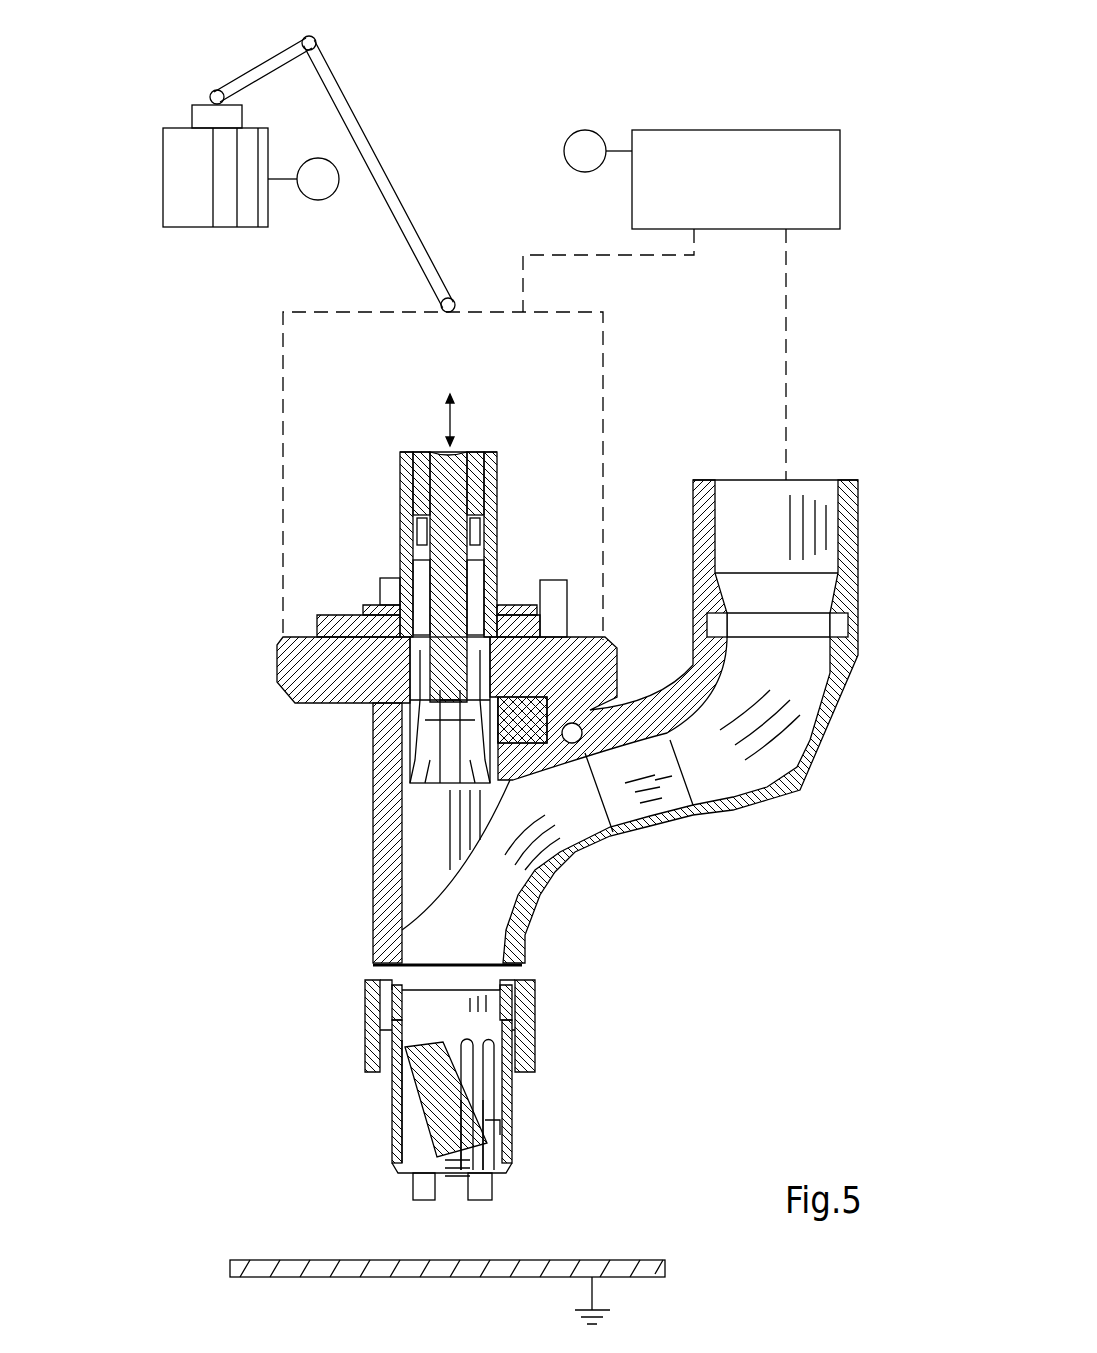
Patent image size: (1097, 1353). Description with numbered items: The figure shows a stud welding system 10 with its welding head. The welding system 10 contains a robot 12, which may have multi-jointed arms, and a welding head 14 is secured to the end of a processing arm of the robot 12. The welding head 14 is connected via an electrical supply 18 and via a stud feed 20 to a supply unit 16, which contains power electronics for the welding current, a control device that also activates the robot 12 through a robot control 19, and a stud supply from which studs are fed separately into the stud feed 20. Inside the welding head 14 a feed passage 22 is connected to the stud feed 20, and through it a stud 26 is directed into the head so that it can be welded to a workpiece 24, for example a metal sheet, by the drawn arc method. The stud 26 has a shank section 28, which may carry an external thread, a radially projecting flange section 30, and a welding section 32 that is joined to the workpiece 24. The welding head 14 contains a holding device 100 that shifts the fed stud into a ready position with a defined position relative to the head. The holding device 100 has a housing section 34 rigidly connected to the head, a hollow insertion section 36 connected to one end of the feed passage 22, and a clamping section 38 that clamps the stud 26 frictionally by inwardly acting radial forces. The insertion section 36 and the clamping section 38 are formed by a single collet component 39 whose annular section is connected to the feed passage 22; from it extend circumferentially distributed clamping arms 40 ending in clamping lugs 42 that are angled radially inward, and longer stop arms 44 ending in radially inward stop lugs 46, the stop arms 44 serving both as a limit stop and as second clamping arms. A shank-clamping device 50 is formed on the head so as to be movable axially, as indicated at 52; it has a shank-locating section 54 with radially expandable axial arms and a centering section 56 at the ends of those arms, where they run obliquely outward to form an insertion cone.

The welding system 10 is at (660, 105).
The robot 12 is at (395, 140).
The welding head 14 is at (283, 470).
The supply unit 16 is at (799, 130).
The electrical supply 18 is at (570, 250).
The robot control 19 is at (585, 130).
The stud feed 20 is at (790, 325).
The feed passage 22 is at (715, 783).
The workpiece 24 is at (620, 1265).
The stud 26 is at (480, 1114).
The shank section 28 is at (440, 1093).
The flange section 30 is at (500, 1125).
The welding section 32 is at (497, 1177).
The housing section 34 is at (367, 970).
The insertion section 36 is at (330, 963).
The clamping section 38 is at (330, 1147).
The collet component 39 is at (467, 1010).
The clamping arms 40 is at (400, 1120).
The clamping lugs 42 is at (413, 1173).
The stop arms 44 is at (477, 1177).
The stop lugs 46 is at (477, 1197).
The shank-clamping device 50 is at (399, 503).
The axial movement 52 is at (447, 428).
The shank-locating section 54 is at (415, 737).
The centering section 56 is at (400, 757).
The holding device 100 is at (567, 1018).